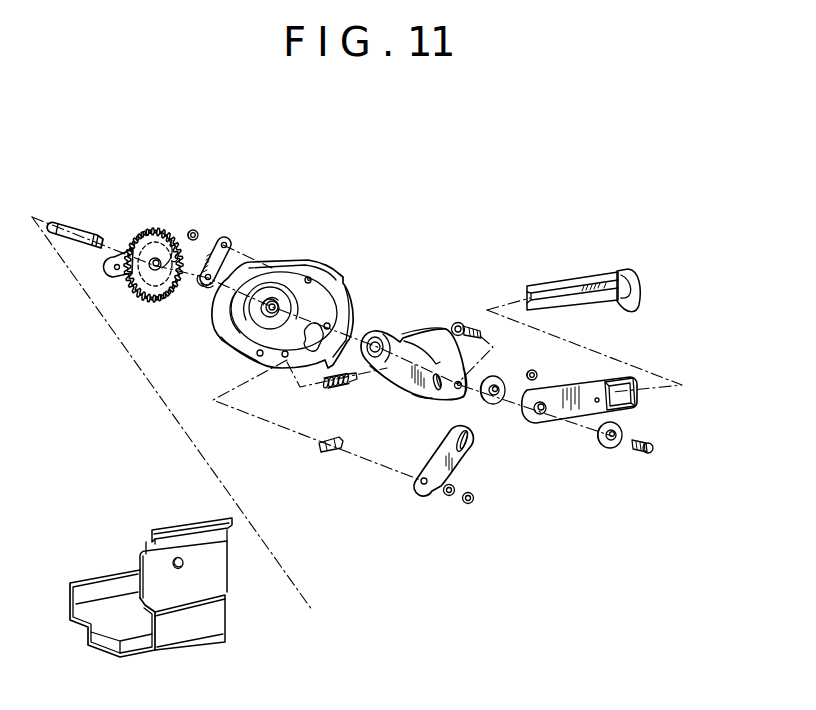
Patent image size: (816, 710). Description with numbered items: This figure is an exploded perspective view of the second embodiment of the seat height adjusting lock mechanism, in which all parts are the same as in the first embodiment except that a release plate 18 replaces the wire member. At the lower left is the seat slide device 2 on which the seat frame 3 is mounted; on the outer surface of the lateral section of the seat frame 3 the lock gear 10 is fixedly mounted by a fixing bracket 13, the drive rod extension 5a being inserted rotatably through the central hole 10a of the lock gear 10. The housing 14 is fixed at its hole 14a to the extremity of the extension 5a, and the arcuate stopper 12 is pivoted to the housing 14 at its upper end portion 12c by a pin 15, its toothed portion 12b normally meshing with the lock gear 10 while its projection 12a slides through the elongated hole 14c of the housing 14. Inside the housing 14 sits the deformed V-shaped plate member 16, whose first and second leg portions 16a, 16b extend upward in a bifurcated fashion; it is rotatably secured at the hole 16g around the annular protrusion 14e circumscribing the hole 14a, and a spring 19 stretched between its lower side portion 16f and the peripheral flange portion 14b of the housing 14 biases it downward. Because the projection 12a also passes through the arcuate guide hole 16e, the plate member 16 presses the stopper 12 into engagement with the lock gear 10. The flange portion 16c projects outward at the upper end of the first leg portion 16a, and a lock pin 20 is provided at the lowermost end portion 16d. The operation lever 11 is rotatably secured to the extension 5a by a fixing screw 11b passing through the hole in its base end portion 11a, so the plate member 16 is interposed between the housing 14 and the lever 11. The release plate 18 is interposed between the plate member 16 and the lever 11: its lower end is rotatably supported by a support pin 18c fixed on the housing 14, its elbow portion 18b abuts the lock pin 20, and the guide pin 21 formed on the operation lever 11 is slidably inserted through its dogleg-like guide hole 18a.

The seat slide device 2 is at (197, 638).
The seat frame 3 is at (190, 526).
The extension of the drive rod 5a is at (52, 226).
The lock gear 10 is at (127, 240).
The central hole 10a is at (153, 238).
The operation lever 11 is at (543, 285).
The base end portion 11a is at (537, 428).
The fixing screw 11b is at (617, 272).
The stopper 12 is at (224, 242).
The projection 12a is at (207, 290).
The toothed portion 12b is at (190, 276).
The upper end portion 12c is at (229, 244).
The fixing bracket 13 is at (118, 272).
The housing 14 is at (333, 279).
The hole 14a is at (297, 304).
The peripheral flange portion 14b is at (258, 353).
The elongated hole 14c is at (328, 327).
The annular protrusion 14e is at (272, 296).
The pin 15 is at (190, 232).
The plate member 16 is at (412, 309).
The first leg portion 16a is at (477, 370).
The second leg portion 16b is at (390, 372).
The flange portion 16c is at (426, 330).
The lowermost end portion 16d is at (490, 401).
The arcuate guide hole 16e is at (438, 394).
The lower side portion 16f is at (418, 397).
The hole 16g is at (377, 342).
The release plate 18 is at (420, 489).
The dogleg-like guide hole 18a is at (466, 449).
The elbow portion 18b is at (468, 462).
The support pin 18c is at (318, 447).
The spring 19 is at (331, 387).
The lock pin 20 is at (460, 322).
The guide pin 21 is at (540, 373).